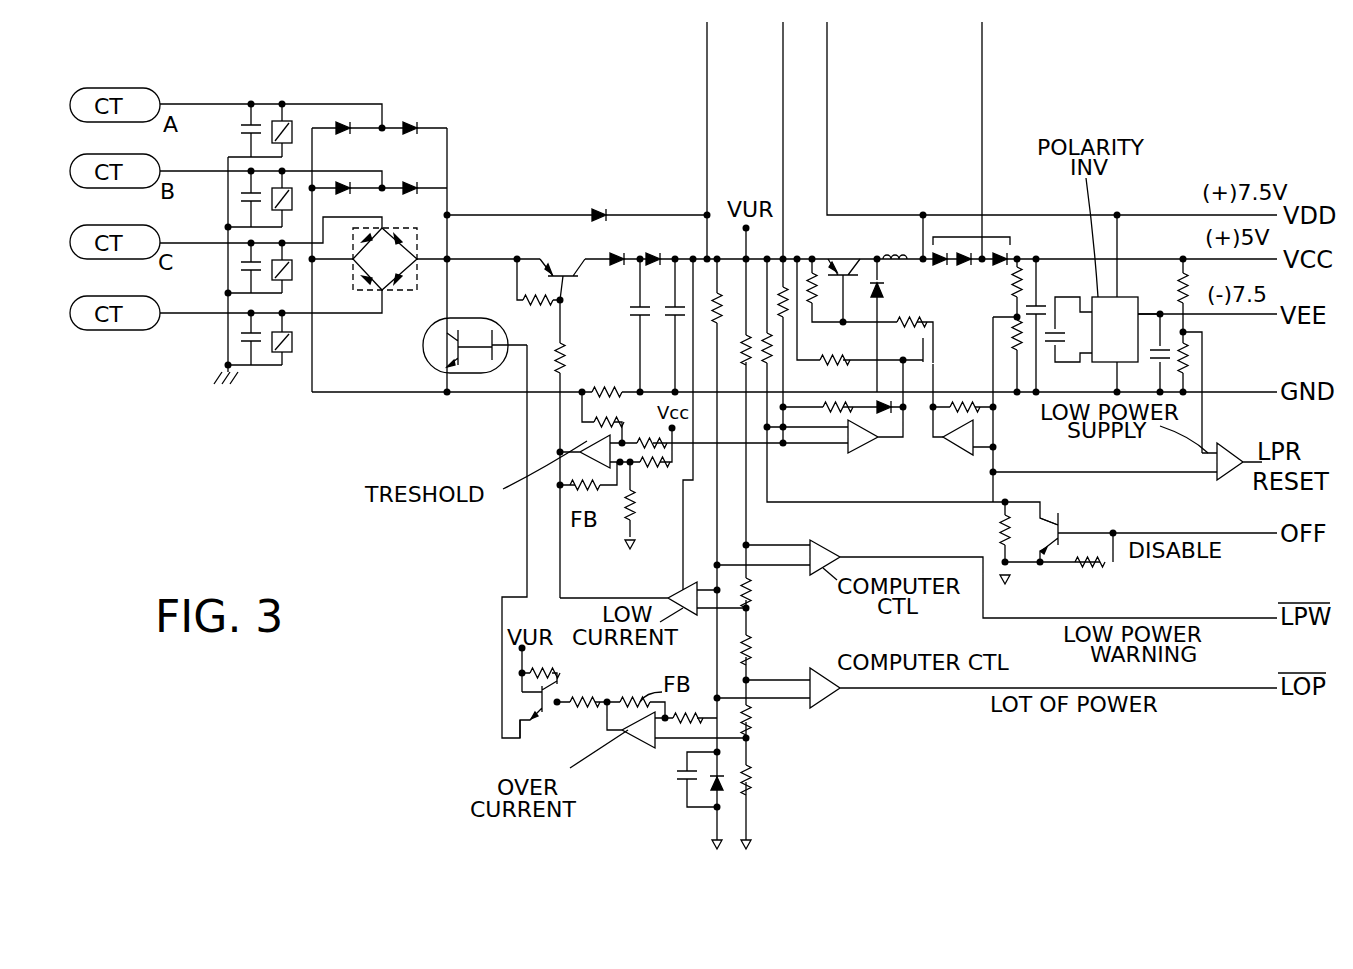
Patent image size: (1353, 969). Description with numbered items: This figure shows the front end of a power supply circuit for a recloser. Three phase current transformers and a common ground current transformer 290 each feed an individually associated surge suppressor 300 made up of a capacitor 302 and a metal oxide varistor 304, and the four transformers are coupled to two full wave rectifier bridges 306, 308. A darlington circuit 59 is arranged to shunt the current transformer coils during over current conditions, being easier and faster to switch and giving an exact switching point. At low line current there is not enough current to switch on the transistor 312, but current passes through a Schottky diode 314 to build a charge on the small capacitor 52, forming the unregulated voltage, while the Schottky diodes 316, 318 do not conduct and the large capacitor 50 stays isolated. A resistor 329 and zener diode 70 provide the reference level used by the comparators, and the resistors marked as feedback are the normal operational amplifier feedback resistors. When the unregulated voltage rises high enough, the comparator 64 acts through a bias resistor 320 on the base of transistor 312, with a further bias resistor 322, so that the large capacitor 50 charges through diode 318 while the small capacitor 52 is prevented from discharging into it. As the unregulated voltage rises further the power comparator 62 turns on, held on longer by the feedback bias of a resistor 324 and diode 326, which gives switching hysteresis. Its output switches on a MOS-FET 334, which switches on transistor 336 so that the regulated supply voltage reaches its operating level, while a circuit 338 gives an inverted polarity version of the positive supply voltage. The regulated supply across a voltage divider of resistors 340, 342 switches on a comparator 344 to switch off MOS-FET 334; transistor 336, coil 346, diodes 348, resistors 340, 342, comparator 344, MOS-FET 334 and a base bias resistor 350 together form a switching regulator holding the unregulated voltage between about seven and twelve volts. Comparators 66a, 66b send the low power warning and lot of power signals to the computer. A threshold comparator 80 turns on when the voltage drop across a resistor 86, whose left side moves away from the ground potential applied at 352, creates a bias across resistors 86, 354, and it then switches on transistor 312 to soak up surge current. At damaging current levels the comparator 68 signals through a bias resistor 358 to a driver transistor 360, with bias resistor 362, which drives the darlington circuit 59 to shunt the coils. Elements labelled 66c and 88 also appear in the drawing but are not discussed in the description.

The common ground current transformer 290 is at (148, 331).
The surge suppressor 300 is at (300, 62).
The capacitor 302 is at (242, 134).
The metal oxide varistor 304 is at (286, 126).
The full wave rectifier bridge 306 is at (398, 170).
The full wave rectifier bridge 308 is at (386, 282).
The transistor 312 is at (556, 262).
The Schottky diode 314 is at (597, 212).
The Schottky diode 316 is at (623, 254).
The Schottky diode 318 is at (657, 254).
The bias resistor 320 is at (566, 360).
The bias resistor 322 is at (518, 296).
The resistor 324 is at (842, 396).
The diode 326 is at (886, 439).
The resistor 329 is at (720, 292).
The MOS-FET 334 is at (918, 335).
The transistor 336 is at (848, 241).
The polarity inverting circuit 338 is at (1130, 297).
The voltage divider resistor 340 is at (1020, 272).
The voltage divider resistor 342 is at (1011, 351).
The comparator 344 is at (966, 454).
The coil 346 is at (906, 262).
The diodes 348 is at (946, 229).
The base bias resistor 350 is at (903, 324).
The ground potential point 352 is at (1015, 408).
The resistor 354 is at (580, 422).
The bias resistor 358 is at (610, 695).
The driver transistor 360 is at (543, 718).
The bias resistor 362 is at (520, 672).
The large capacitor 50 is at (635, 306).
The small capacitor 52 is at (664, 310).
The darlington circuit 59 is at (424, 343).
The power comparator 62 is at (862, 450).
The comparator 64 is at (681, 589).
The comparator 66a is at (816, 572).
The comparator 66b is at (830, 694).
The reset buffer 66c is at (1218, 443).
The comparator 68 is at (644, 748).
The zener diode 70 is at (747, 776).
The comparator 80 is at (545, 444).
The resistor 86 is at (610, 387).
The resistor 88 is at (650, 505).